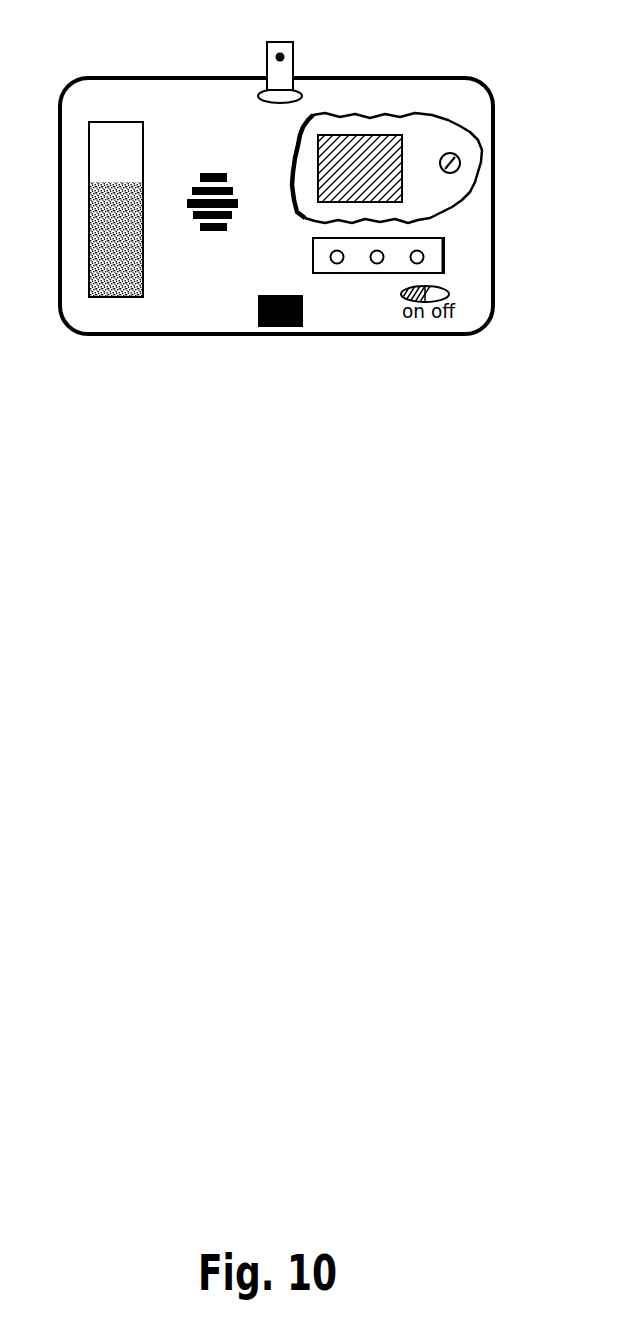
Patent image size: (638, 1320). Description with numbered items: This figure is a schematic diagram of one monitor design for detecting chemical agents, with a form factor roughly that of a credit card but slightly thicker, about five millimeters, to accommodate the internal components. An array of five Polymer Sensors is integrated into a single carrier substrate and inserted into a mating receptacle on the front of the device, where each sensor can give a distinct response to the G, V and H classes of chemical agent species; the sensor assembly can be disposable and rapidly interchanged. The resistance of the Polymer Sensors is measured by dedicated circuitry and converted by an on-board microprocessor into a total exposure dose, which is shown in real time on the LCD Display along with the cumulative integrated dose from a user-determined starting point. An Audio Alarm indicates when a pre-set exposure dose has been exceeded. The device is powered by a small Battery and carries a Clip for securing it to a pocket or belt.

The LCD display LCD Display is at (118, 297).
The audio alarm Audio Alarm is at (213, 167).
The clip Clip is at (294, 55).
The battery Battery is at (462, 163).
The polymer sensors Polymer Sensors is at (426, 257).